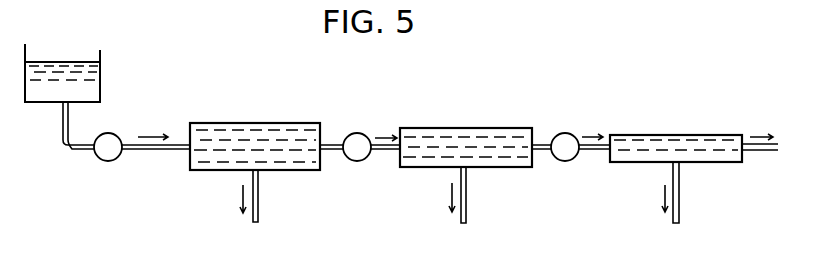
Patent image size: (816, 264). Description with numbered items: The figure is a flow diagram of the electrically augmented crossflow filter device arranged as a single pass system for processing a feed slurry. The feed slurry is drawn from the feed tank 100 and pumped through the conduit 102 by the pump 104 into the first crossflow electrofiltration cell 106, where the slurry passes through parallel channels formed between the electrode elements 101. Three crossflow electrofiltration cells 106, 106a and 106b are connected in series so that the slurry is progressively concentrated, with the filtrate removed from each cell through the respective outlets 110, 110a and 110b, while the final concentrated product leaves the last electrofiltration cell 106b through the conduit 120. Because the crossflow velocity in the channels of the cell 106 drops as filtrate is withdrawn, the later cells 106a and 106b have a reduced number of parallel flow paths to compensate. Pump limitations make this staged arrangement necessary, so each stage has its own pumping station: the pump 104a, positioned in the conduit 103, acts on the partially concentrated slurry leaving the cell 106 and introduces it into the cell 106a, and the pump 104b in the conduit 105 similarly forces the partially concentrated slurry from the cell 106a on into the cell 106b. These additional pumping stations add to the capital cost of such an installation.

The feed tank 100 is at (100, 52).
The electrode elements 101 is at (265, 140).
The conduit 102 is at (132, 148).
The conduit 103 is at (380, 150).
The pump 104 is at (112, 133).
The pump 104a is at (352, 133).
The pump 104b is at (562, 133).
The conduit 105 is at (586, 150).
The crossflow electrofiltration cell 106 is at (243, 123).
The crossflow electrofiltration cell 106a is at (448, 128).
The crossflow electrofiltration cell 106b is at (660, 135).
The outlet 110 is at (258, 207).
The outlet 110a is at (467, 212).
The outlet 110b is at (679, 212).
The conduit 120 is at (760, 152).